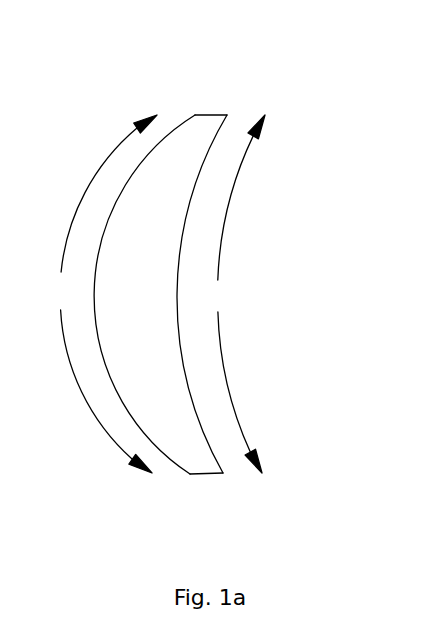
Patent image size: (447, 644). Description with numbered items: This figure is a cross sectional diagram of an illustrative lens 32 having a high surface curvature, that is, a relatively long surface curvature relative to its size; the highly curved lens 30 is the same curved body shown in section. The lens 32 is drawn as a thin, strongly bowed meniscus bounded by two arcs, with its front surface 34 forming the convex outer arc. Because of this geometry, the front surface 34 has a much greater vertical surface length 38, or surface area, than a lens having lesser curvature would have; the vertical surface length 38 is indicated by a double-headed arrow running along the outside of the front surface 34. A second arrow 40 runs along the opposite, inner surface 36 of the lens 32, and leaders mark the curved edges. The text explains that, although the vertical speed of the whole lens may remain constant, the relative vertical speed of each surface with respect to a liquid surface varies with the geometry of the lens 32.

The highly curved lens 30 is at (287, 50).
The lens 32 is at (195, 147).
The front surface 34 is at (174, 463).
The inner surface 36 is at (216, 462).
The vertical surface length 38 is at (102, 294).
The inner surface arc 40 is at (235, 294).